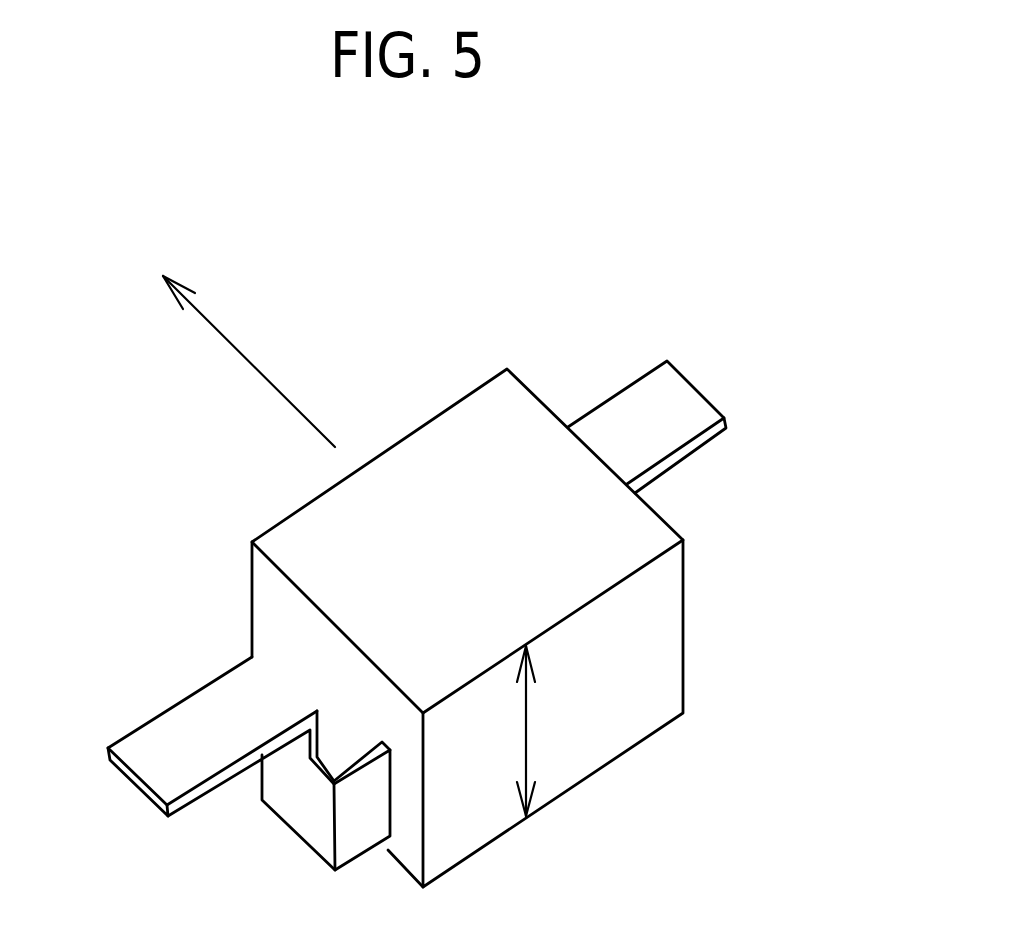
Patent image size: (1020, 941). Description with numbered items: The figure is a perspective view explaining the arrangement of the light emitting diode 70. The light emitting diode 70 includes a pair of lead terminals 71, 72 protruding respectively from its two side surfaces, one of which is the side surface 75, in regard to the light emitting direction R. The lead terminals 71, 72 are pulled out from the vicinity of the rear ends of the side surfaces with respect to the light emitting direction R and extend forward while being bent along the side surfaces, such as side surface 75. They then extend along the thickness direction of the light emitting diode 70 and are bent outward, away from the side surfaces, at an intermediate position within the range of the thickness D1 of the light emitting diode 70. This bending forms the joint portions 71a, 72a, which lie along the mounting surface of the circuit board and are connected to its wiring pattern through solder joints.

The light emitting diode 70 is at (397, 540).
The lead terminal 71 is at (722, 396).
The joint portion 71a is at (645, 403).
The lead terminal 72 is at (222, 782).
The joint portion 72a is at (167, 750).
The side surface 75 is at (277, 622).
The light emitting direction R is at (248, 360).
The thickness D1 is at (528, 742).